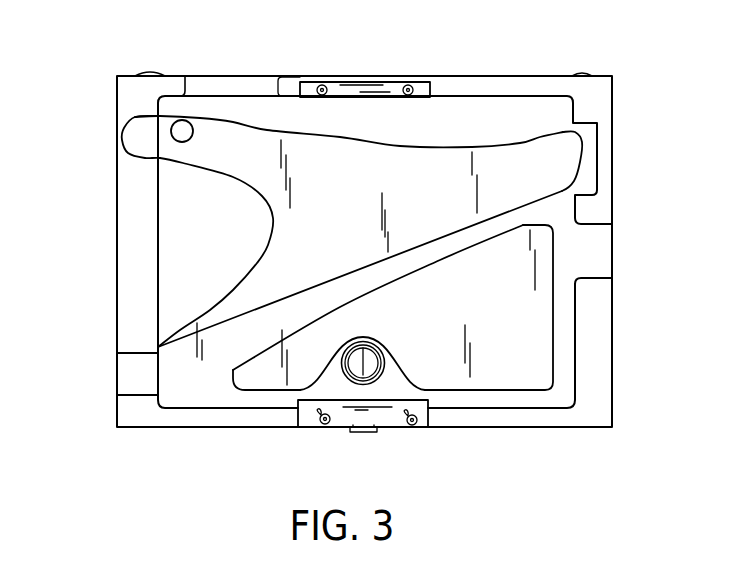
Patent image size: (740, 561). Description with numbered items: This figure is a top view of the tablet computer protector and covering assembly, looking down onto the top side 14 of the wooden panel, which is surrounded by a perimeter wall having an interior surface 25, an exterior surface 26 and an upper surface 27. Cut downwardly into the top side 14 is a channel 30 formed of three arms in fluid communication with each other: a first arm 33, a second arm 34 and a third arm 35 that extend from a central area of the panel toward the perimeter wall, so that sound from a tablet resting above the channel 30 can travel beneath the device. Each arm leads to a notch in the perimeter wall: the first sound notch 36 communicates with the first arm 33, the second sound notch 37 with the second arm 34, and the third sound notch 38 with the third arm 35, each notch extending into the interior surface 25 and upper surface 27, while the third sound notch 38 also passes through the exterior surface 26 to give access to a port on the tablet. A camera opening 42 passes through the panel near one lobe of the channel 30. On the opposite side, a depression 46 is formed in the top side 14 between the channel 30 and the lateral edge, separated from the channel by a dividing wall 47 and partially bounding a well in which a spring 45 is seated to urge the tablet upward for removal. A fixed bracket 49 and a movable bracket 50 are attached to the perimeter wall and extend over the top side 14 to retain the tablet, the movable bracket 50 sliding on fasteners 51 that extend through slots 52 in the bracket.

The top side 14 is at (488, 117).
The interior surface 25 is at (568, 297).
The exterior surface 26 is at (612, 311).
The upper surface 27 is at (587, 357).
The channel 30 is at (370, 160).
The first arm 33 is at (557, 155).
The second arm 34 is at (217, 127).
The third arm 35 is at (222, 328).
The first sound notch 36 is at (594, 174).
The second sound notch 37 is at (123, 138).
The third sound notch 38 is at (117, 368).
The camera opening 42 is at (173, 124).
The spring 45 is at (379, 380).
The depression 46 is at (532, 368).
The dividing wall 47 is at (493, 230).
The fixed bracket 49 is at (354, 82).
The movable bracket 50 is at (300, 424).
The fasteners 51 is at (412, 425).
The slots 52 is at (424, 412).